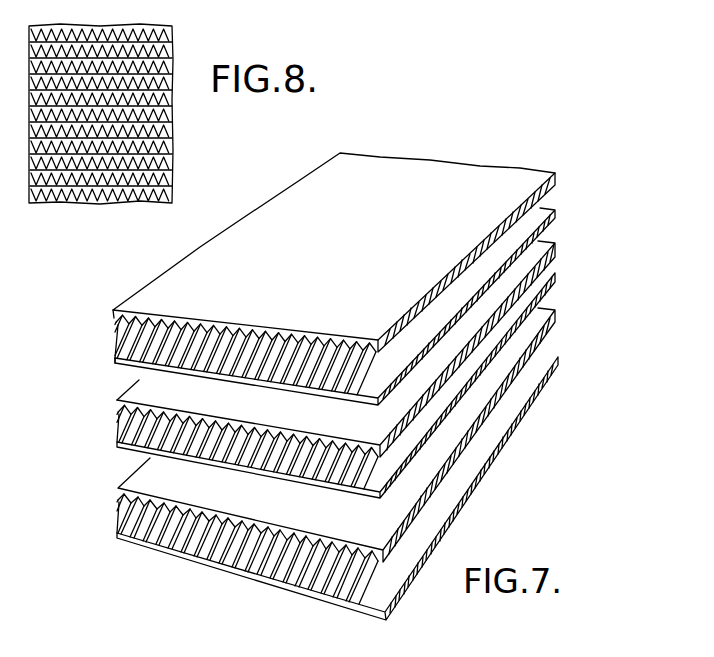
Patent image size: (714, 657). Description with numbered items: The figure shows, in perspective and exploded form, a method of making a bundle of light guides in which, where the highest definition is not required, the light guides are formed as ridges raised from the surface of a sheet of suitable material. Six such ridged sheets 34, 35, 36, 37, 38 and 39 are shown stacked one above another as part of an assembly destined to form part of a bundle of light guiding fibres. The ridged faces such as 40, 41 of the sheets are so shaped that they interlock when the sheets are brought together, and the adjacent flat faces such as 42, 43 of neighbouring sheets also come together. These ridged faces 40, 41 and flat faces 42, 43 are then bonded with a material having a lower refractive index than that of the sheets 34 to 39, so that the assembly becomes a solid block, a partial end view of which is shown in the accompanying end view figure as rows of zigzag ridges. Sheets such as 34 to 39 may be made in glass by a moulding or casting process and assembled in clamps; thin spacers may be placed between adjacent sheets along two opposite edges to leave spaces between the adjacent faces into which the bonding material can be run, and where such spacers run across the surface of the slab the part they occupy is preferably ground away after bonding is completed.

The sheet 34 is at (375, 345).
The sheet 35 is at (361, 397).
The sheet 36 is at (291, 436).
The sheet 37 is at (345, 495).
The sheet 38 is at (360, 551).
The sheet 39 is at (325, 600).
The ridged face 40 is at (312, 368).
The ridged face 41 is at (124, 327).
The flat face 42 is at (138, 368).
The flat face 43 is at (121, 398).